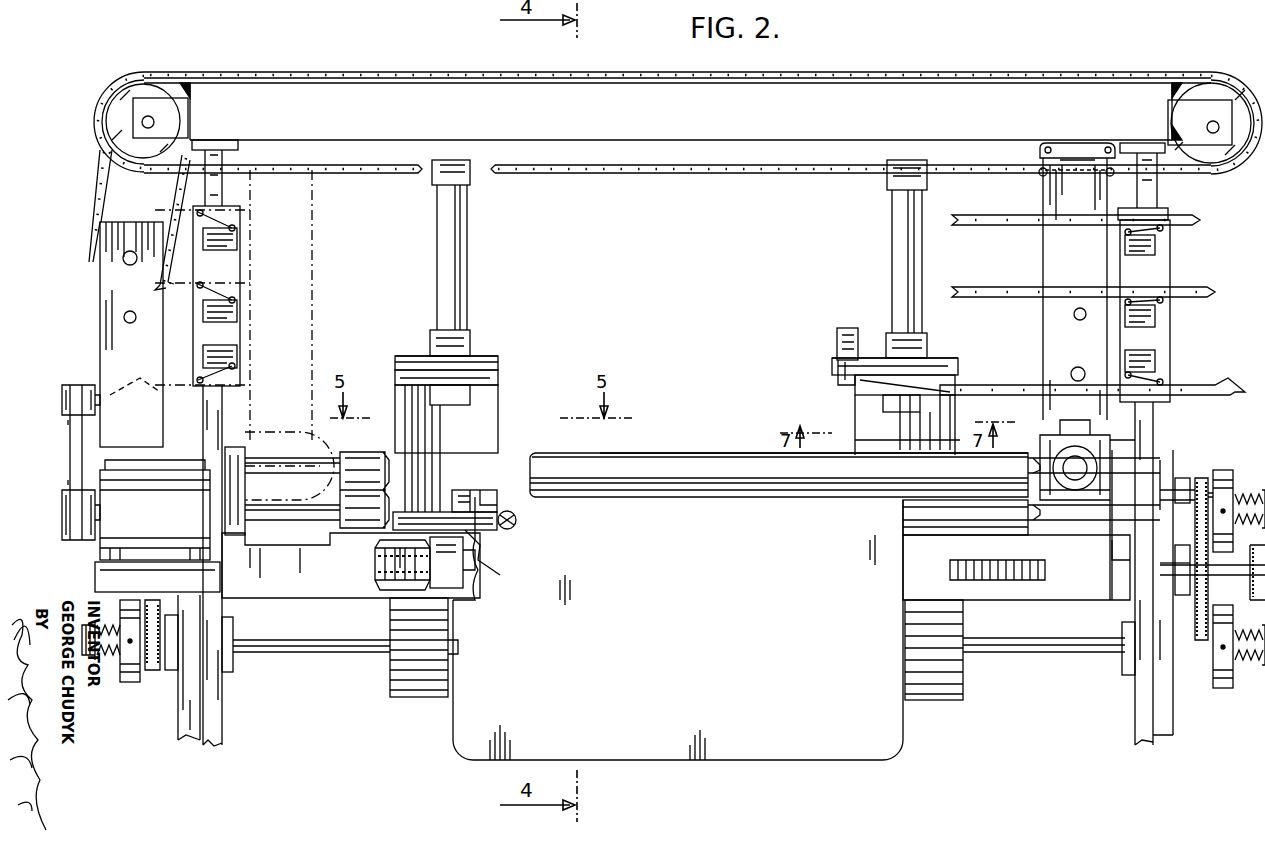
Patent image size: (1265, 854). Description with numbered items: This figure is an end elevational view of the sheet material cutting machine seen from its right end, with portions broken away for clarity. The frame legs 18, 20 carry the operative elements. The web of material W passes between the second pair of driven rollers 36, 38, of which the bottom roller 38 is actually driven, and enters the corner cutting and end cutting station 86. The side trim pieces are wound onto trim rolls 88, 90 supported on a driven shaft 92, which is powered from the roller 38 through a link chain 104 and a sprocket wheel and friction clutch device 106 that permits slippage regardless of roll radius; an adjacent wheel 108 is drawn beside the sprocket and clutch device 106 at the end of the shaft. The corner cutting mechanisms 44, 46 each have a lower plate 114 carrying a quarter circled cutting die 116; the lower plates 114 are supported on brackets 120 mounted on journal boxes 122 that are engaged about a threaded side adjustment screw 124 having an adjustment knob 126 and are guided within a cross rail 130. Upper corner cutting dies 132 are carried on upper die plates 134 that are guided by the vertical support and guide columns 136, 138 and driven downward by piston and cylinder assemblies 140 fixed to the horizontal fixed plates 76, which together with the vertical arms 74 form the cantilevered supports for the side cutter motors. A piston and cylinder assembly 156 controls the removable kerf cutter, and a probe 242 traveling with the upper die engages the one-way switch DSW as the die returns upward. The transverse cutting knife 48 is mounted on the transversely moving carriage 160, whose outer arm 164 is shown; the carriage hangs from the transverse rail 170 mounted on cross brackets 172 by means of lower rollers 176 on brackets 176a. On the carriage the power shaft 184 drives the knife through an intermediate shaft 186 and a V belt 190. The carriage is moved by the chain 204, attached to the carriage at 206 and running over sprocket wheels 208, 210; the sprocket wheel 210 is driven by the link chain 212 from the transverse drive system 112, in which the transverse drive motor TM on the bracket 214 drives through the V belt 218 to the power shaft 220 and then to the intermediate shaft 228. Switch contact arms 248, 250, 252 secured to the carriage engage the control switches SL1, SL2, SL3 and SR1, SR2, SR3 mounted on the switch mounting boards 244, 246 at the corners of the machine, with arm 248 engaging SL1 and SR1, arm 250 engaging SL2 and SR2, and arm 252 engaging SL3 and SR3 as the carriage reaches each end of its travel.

The leg 18 is at (186, 742).
The leg 20 is at (222, 742).
The driven roller 36 is at (668, 456).
The driven roller 38 is at (905, 506).
The corner cutting mechanism 44 is at (509, 339).
The corner cutting mechanism 46 is at (962, 339).
The transverse cutting knife 48 is at (1040, 455).
The vertical arm 74 is at (498, 410).
The horizontal fixed plate 76 is at (400, 356).
The corner cutting and end cutting station 86 is at (532, 454).
The trim roll 88 is at (410, 698).
The trim roll 90 is at (937, 702).
The driven shaft 92 is at (312, 655).
The link chain 104 is at (152, 670).
The sprocket wheel and friction clutch device 106 is at (127, 684).
The handwheel 108 is at (1222, 470).
The transverse drive system 112 is at (92, 352).
The lower plate 114 is at (497, 530).
The quarter circled cutting die 116 is at (463, 496).
The bracket 120 is at (480, 548).
The journal box 122 is at (463, 572).
The side adjustment screw 124 is at (375, 588).
The adjustment knob 126 is at (1252, 596).
The cross rail 130 is at (316, 595).
The upper corner cutting die 132 is at (470, 395).
The upper die plate 134 is at (490, 378).
The vertical support and guide column 136 is at (440, 442).
The vertical support and guide column 138 is at (410, 410).
The piston and cylinder assembly 140 is at (465, 268).
The piston and cylinder assembly 156 is at (516, 520).
The transversely moving carriage 160 is at (1040, 246).
The outer arm 164 is at (1048, 260).
The transverse rail 170 is at (440, 100).
The cross bracket 172 is at (225, 140).
The lower roller 176 is at (1042, 146).
The bracket 176a is at (1075, 150).
The power shaft 184 is at (1074, 314).
The intermediate shaft 186 is at (1072, 370).
The V belt 190 is at (1078, 442).
The chain 204 is at (712, 172).
The chain attachment point 206 is at (1108, 175).
The sprocket wheel 208 is at (1218, 100).
The sprocket wheel 210 is at (146, 82).
The link chain 212 is at (96, 178).
The bracket 214 is at (97, 577).
The V belt 218 is at (70, 462).
The power shaft 220 is at (124, 317).
The intermediate shaft 228 is at (123, 258).
The probe 242 is at (840, 372).
The switch mounting board 244 is at (237, 278).
The switch mounting board 246 is at (1172, 278).
The switch contact arm 248 is at (1190, 218).
The switch contact arm 250 is at (1210, 293).
The switch contact arm 252 is at (1230, 394).
The control switch SL1 is at (237, 243).
The control switch SL2 is at (237, 315).
The control switch SL3 is at (237, 357).
The control switch SR1 is at (1157, 240).
The control switch SR2 is at (1157, 320).
The control switch SR3 is at (1157, 360).
The one-way switch DSW is at (836, 340).
The transverse drive motor TM is at (155, 510).
The web material W is at (792, 762).